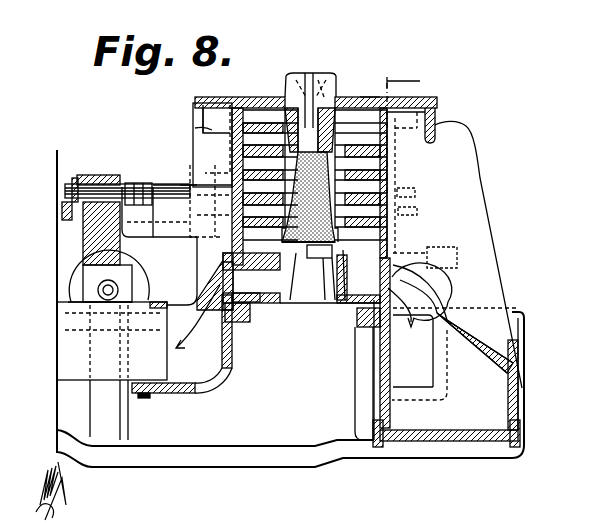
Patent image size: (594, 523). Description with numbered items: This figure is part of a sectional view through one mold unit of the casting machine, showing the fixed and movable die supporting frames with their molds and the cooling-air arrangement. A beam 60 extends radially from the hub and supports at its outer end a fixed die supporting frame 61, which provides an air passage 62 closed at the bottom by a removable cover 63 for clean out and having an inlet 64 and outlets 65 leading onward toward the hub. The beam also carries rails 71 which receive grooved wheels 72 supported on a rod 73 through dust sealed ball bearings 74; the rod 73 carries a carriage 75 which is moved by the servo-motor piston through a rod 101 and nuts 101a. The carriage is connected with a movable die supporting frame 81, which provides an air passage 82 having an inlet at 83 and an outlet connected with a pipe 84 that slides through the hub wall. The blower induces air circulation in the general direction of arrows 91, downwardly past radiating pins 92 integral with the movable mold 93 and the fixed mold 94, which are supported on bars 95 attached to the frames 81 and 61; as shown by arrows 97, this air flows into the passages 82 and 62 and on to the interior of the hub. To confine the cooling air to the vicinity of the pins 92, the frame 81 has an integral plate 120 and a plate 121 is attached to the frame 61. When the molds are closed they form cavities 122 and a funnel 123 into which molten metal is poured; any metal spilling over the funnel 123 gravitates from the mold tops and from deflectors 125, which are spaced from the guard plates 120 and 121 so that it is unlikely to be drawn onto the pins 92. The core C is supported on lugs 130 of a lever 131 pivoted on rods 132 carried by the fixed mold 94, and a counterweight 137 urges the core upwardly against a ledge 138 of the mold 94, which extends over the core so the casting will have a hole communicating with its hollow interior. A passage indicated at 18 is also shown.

The passage 18 is at (417, 237).
The beam 60 is at (163, 468).
The fixed die supporting frame 61 is at (437, 102).
The air passage 62 is at (493, 397).
The cover 63 is at (457, 441).
The inlet 64 is at (387, 278).
The outlet 65 is at (400, 392).
The rail 71 is at (57, 322).
The grooved wheel 72 is at (75, 270).
The rod 73 is at (127, 282).
The dust sealed ball bearing 74 is at (113, 288).
The carriage 75 is at (129, 190).
The movable die supporting frame 81 is at (193, 97).
The air passage 82 is at (193, 372).
The inlet 83 is at (230, 280).
The pipe 84 is at (75, 387).
The arrow 91 is at (228, 118).
The radiating pin 92 is at (266, 108).
The movable mold 93 is at (240, 97).
The fixed mold 94 is at (370, 80).
The bar 95 is at (238, 318).
The arrow 97 is at (455, 296).
The rod 101 is at (65, 184).
The nut 101a is at (145, 190).
The plate 120 is at (230, 167).
The plate 121 is at (388, 227).
The cavity 122 is at (336, 97).
The funnel 123 is at (332, 73).
The deflector 125 is at (195, 128).
The lug 130 is at (313, 186).
The lever 131 is at (296, 300).
The rod 132 is at (328, 300).
The counterweight 137 is at (457, 260).
The ledge 138 is at (315, 183).